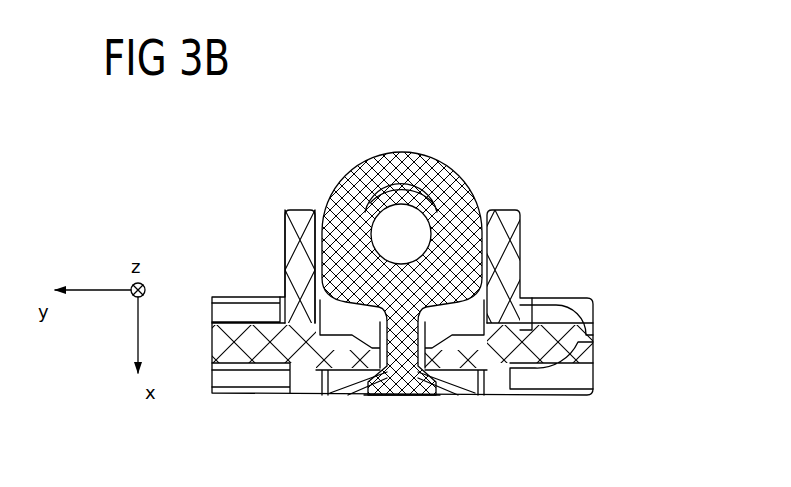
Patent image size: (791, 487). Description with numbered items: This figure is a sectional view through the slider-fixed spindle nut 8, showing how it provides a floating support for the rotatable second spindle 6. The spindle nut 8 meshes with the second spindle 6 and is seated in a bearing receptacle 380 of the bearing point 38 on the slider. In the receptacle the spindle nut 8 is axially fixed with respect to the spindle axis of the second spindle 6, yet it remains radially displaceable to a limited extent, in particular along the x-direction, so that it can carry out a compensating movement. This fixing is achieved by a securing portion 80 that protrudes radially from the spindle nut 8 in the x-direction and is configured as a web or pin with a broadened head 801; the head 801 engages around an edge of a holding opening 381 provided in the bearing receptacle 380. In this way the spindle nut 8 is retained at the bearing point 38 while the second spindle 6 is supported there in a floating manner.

The spindle nut 8 is at (370, 170).
The second spindle 6 is at (410, 230).
The bearing receptacle 380 is at (316, 300).
The bearing point 38 is at (527, 249).
The securing portion 80 is at (381, 347).
The broadened head 801 is at (402, 396).
The holding opening 381 is at (427, 372).